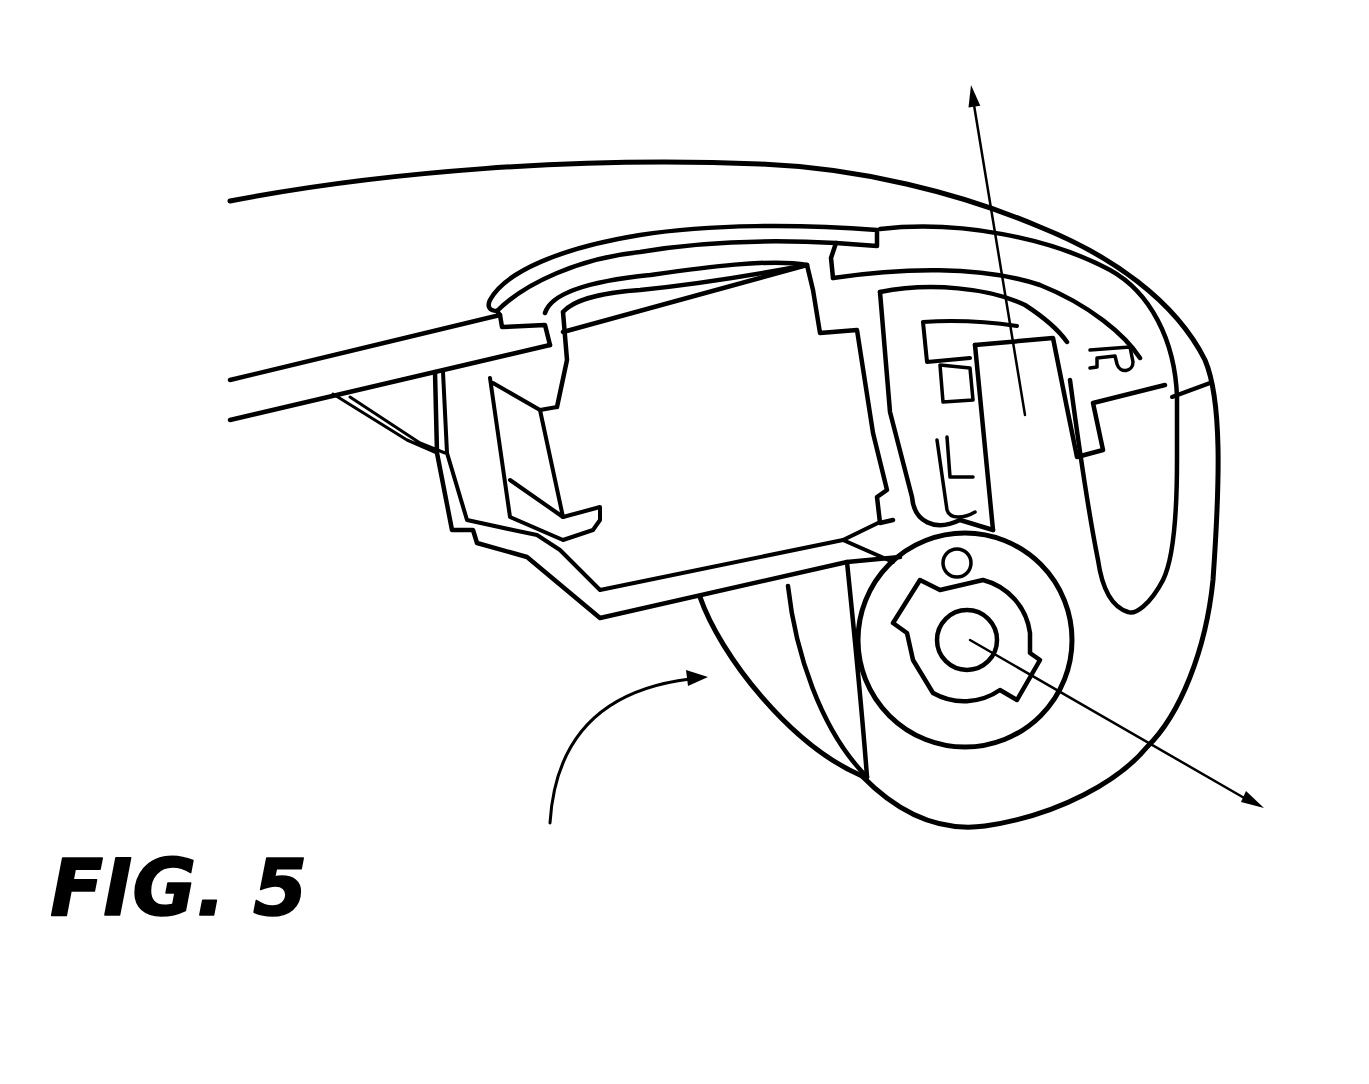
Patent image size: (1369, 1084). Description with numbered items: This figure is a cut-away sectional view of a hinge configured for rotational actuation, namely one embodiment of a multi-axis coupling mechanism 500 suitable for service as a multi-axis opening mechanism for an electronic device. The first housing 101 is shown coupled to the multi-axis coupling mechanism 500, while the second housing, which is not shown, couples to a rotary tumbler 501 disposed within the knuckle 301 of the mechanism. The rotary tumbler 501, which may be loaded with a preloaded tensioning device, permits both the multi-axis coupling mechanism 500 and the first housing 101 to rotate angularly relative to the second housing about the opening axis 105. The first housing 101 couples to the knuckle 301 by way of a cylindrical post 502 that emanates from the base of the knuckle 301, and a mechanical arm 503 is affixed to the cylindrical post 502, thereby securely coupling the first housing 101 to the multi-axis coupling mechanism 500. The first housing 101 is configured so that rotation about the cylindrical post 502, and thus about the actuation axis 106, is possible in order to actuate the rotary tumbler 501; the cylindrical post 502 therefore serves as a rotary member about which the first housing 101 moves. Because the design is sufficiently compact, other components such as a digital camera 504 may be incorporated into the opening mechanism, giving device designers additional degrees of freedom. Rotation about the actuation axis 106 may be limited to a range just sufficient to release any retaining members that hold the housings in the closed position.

The first housing 101 is at (645, 197).
The opening axis 105 is at (1187, 760).
The actuation axis 106 is at (990, 168).
The knuckle 301 is at (997, 787).
The multi-axis coupling mechanism 500 is at (614, 769).
The rotary tumbler 501 is at (955, 683).
The cylindrical post 502 is at (1033, 462).
The mechanical arm 503 is at (1127, 348).
The digital camera 504 is at (633, 510).